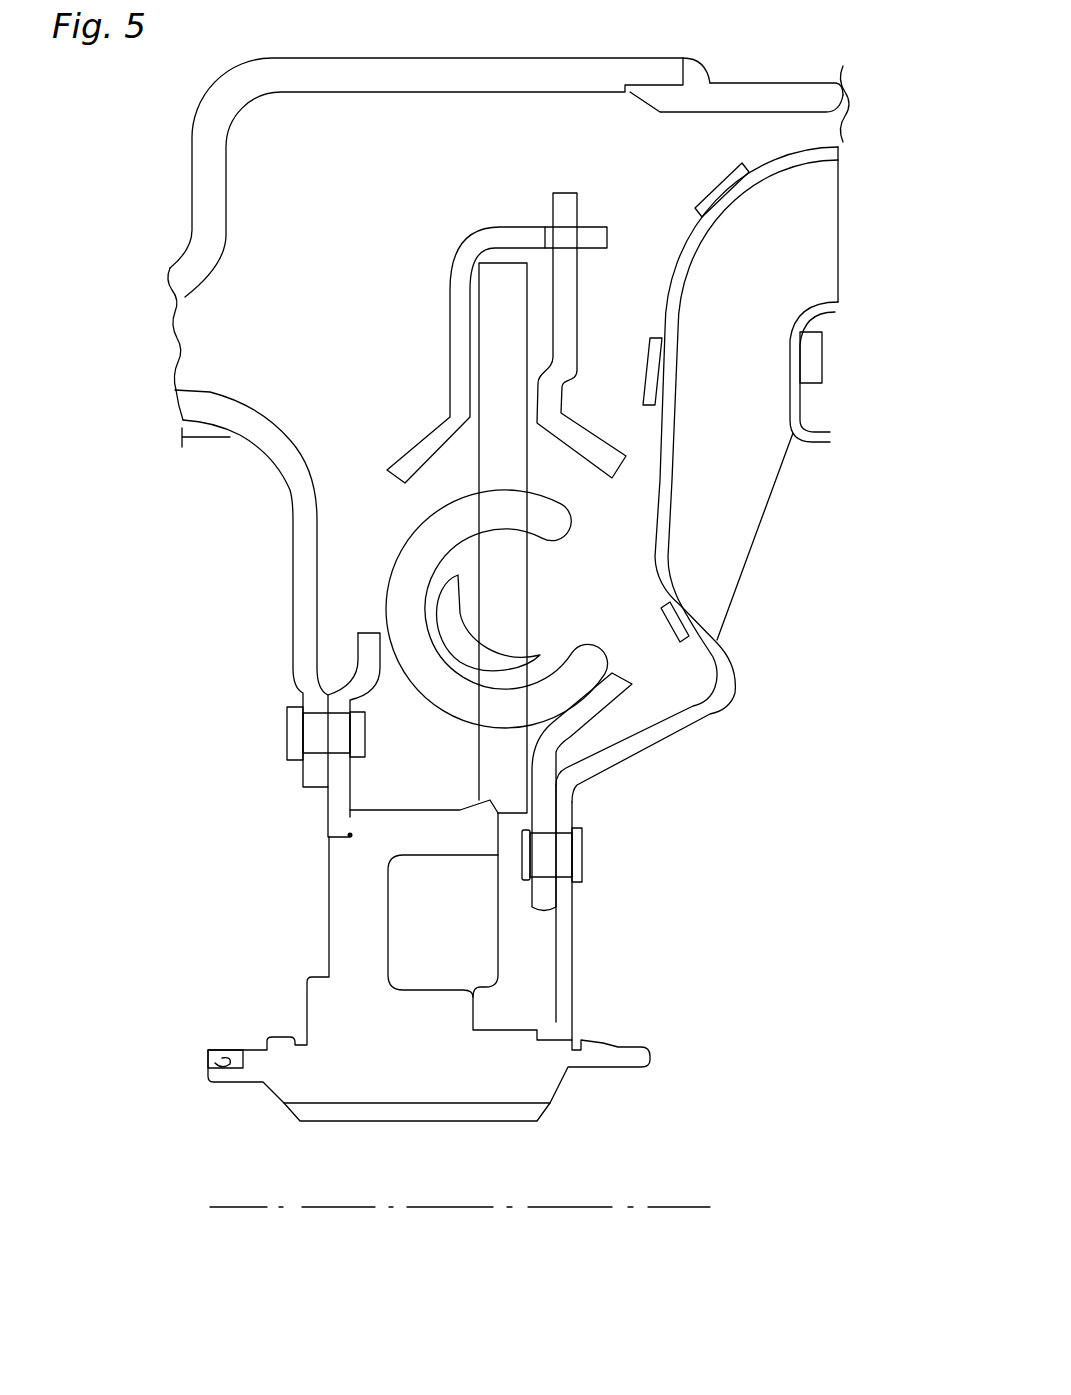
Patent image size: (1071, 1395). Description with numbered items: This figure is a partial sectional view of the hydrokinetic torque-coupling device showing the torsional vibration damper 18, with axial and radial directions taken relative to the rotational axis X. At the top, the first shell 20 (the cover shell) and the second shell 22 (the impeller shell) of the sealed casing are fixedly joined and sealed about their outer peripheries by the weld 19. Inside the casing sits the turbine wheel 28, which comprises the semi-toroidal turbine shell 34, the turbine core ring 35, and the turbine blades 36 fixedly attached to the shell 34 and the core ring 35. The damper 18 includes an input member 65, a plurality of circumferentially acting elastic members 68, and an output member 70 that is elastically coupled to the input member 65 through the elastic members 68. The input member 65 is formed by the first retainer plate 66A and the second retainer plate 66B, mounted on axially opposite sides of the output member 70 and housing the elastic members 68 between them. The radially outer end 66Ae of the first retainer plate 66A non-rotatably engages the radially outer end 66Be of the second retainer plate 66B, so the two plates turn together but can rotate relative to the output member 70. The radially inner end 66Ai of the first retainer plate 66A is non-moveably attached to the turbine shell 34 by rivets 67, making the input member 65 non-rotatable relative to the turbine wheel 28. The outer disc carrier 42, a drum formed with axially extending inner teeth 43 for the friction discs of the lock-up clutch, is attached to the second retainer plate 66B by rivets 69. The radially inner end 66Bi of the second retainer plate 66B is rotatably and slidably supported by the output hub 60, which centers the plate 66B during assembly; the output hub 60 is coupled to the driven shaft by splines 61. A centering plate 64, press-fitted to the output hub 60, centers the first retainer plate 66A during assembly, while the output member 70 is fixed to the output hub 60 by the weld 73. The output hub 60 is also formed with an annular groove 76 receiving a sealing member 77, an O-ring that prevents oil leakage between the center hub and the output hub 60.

The torsional vibration damper 18 is at (503, 188).
The weld 19 is at (702, 72).
The first shell 20 is at (195, 170).
The second shell 22 is at (830, 100).
The turbine wheel 28 is at (852, 237).
The turbine shell 34 is at (660, 562).
The turbine core ring 35 is at (795, 345).
The turbine blades 36 is at (736, 520).
The outer disc carrier 42 is at (212, 398).
The inner teeth 43 is at (204, 442).
The output hub 60 is at (400, 1077).
The splines 61 is at (477, 1110).
The centering plate 64 is at (542, 945).
The input member 65 is at (444, 288).
The first retainer plate 66A is at (610, 698).
The radially outer end of the first retainer plate 66Ae is at (565, 200).
The radially inner end of the first retainer plate 66Ai is at (540, 822).
The second retainer plate 66B is at (452, 372).
The radially outer end of the second retainer plate 66Be is at (600, 245).
The radially inner end of the second retainer plate 66Bi is at (340, 810).
The rivets 67 is at (565, 855).
The elastic members 68 is at (405, 578).
The rivets 69 is at (314, 733).
The output member 70 is at (492, 757).
The weld 73 is at (492, 808).
The annular groove 76 is at (222, 1058).
The sealing member 77 is at (233, 1052).
The rotational axis X is at (233, 1207).